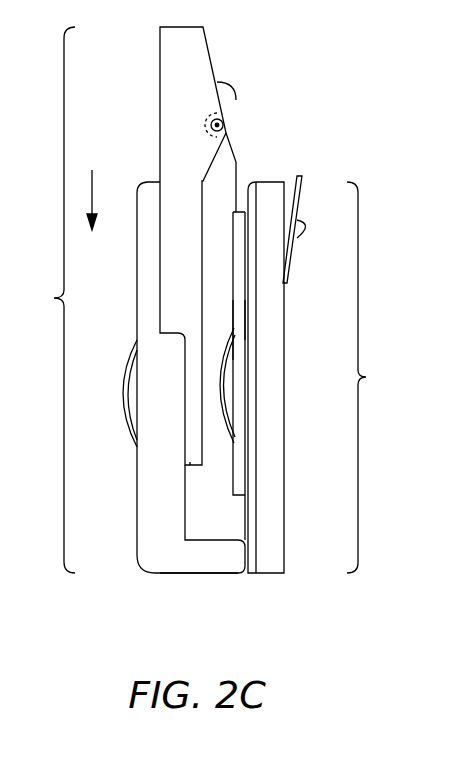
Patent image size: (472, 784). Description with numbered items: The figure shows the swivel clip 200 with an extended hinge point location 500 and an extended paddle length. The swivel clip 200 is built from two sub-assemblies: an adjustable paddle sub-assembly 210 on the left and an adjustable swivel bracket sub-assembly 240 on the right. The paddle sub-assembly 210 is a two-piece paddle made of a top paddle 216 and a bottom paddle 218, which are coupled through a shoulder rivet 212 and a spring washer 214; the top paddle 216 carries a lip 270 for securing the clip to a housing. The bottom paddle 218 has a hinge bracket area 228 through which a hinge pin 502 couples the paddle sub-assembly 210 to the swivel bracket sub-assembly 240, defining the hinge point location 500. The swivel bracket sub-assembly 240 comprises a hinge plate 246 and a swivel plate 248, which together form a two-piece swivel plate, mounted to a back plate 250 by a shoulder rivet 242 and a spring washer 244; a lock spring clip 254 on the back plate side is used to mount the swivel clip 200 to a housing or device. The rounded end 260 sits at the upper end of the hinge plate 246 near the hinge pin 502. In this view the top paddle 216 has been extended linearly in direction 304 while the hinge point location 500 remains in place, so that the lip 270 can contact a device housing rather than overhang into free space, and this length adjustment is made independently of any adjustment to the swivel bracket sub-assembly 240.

The swivel clip 200 is at (376, 649).
The adjustable paddle sub-assembly 210 is at (44, 300).
The shoulder rivet 212 is at (122, 397).
The spring washer 214 is at (135, 348).
The top paddle 216 is at (146, 533).
The bottom paddle 218 is at (190, 462).
The hinge bracket area 228 is at (172, 158).
The adjustable swivel bracket sub-assembly 240 is at (329, 377).
The shoulder rivet 242 is at (221, 382).
The spring washer 244 is at (229, 340).
The hinge plate 246 is at (237, 175).
The swivel plate 248 is at (239, 322).
The back plate 250 is at (275, 438).
The lock spring clip 254 is at (290, 250).
The rounded end 260 is at (230, 108).
The lip 270 is at (182, 575).
The direction 304 is at (93, 189).
The hinge point location 500 is at (207, 120).
The hinge pin 502 is at (210, 125).